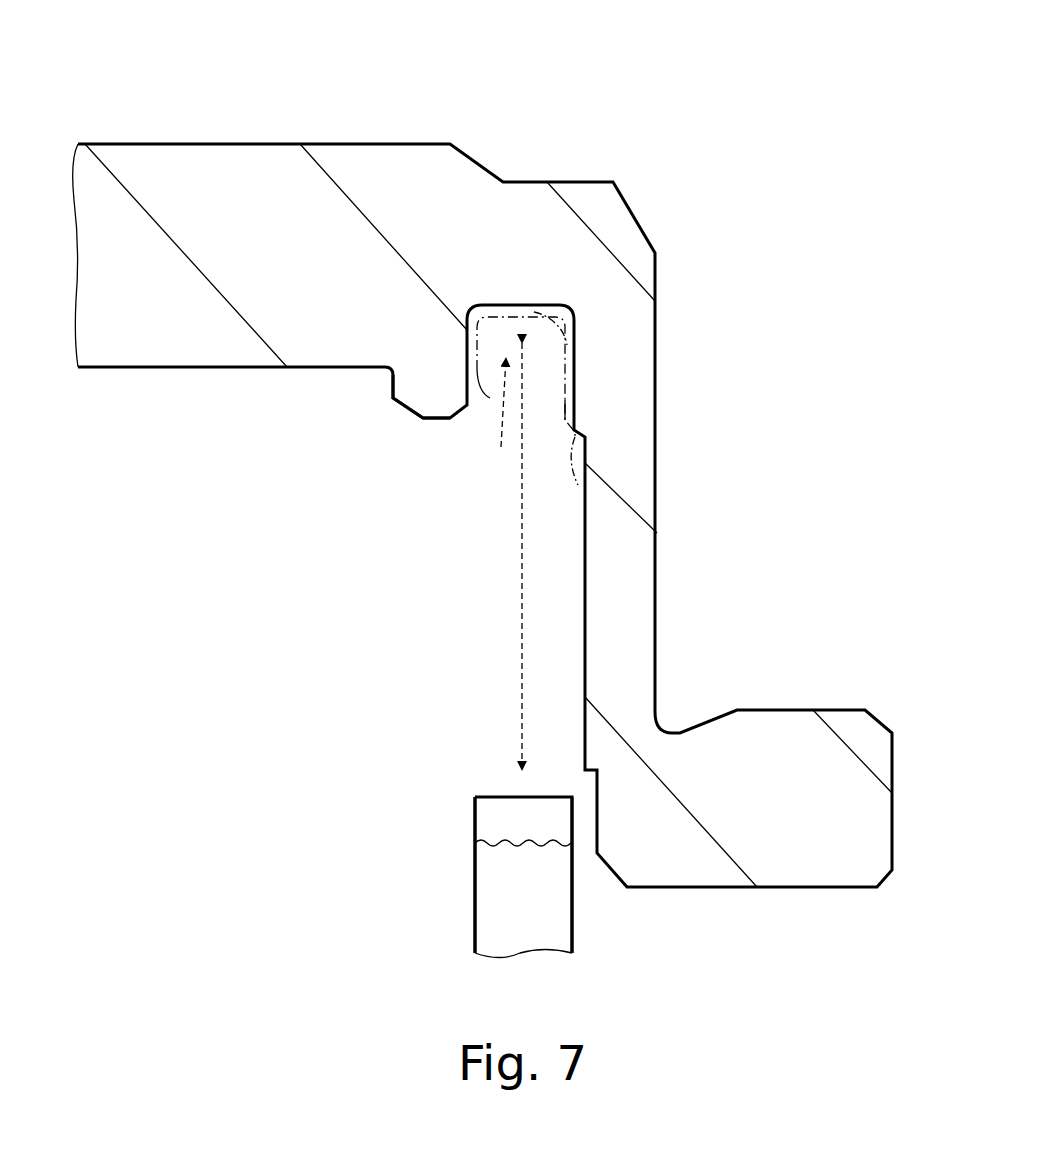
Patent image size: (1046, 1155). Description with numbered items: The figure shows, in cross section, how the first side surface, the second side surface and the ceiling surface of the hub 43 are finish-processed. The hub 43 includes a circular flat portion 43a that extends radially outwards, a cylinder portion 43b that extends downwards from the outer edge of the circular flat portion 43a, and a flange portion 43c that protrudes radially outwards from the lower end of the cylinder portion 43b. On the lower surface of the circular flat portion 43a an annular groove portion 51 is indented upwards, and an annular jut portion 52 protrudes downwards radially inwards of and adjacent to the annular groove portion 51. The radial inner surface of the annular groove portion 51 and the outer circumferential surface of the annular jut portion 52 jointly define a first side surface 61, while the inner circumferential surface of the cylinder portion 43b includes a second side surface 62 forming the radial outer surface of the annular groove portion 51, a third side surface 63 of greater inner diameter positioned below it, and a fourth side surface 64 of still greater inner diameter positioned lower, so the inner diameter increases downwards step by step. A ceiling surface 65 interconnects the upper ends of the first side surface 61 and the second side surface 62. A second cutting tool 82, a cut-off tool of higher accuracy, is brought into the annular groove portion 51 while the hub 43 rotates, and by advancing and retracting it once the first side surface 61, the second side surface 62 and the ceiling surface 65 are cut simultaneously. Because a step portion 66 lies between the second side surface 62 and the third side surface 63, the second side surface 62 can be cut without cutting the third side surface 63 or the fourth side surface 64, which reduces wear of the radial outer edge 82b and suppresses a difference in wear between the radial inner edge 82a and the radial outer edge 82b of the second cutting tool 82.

The hub 43 is at (648, 142).
The circular flat portion 43a is at (258, 163).
The cylinder portion 43b is at (633, 575).
The flange portion 43c is at (792, 862).
The annular groove portion 51 is at (499, 426).
The annular jut portion 52 is at (425, 390).
The first side surface 61 is at (490, 398).
The second side surface 62 is at (563, 363).
The third side surface 63 is at (583, 595).
The fourth side surface 64 is at (592, 820).
The ceiling surface 65 is at (577, 342).
The step portion 66 is at (578, 482).
The second cutting tool 82 is at (490, 925).
The radial inner edge 82a is at (472, 788).
The radial outer edge 82b is at (570, 788).